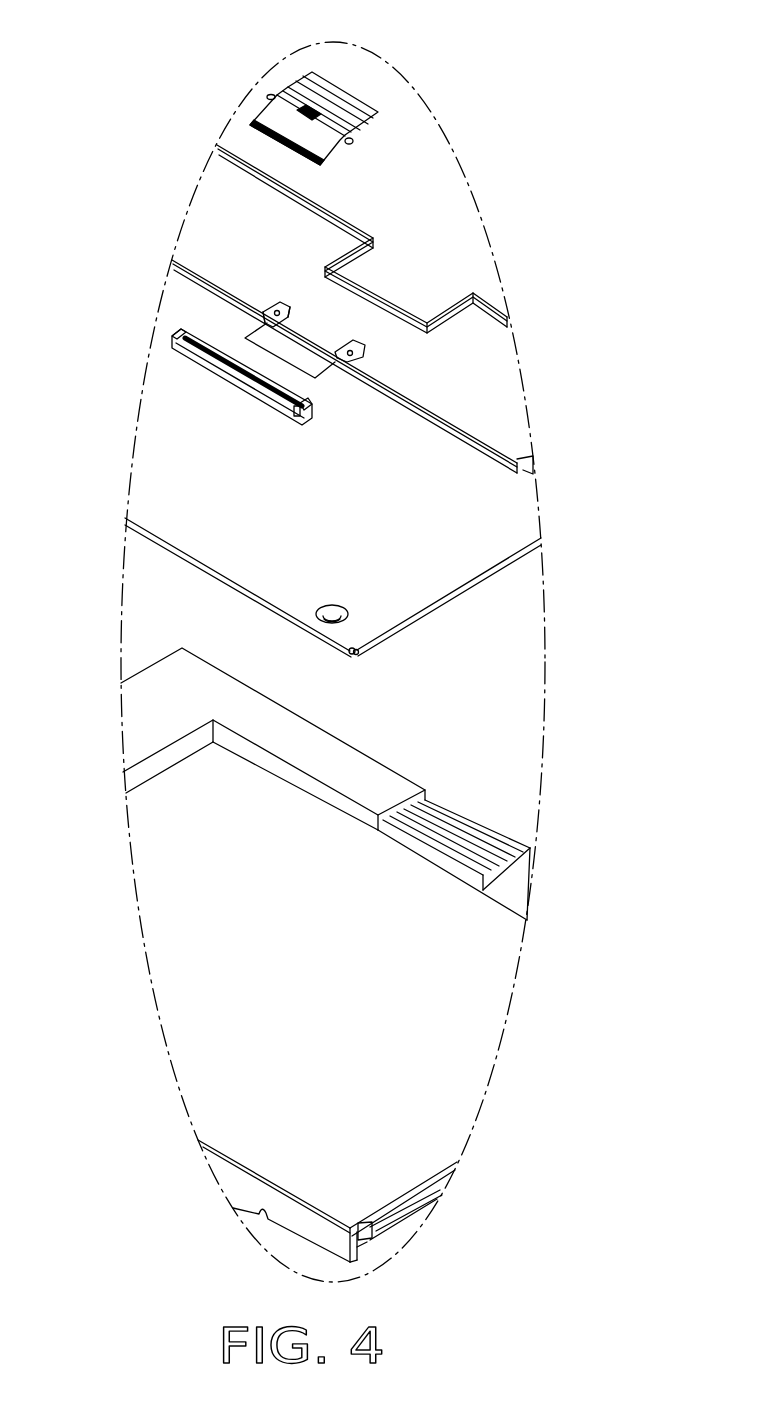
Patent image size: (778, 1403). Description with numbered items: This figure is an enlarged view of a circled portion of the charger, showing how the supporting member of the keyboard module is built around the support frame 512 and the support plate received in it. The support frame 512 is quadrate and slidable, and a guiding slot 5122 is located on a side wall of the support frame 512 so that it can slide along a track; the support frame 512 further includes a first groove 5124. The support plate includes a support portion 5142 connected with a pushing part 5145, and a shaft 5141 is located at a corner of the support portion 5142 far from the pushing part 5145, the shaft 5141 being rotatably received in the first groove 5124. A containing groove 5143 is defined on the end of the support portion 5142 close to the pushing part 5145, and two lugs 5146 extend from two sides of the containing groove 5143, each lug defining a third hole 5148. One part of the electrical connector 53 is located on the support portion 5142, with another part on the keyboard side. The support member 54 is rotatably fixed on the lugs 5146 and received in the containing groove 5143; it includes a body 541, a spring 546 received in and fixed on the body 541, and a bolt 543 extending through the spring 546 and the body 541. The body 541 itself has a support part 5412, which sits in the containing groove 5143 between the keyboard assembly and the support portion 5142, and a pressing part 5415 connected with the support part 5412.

The support member 54 is at (507, 24).
The body 541 is at (352, 103).
The bolt 543 is at (357, 138).
The spring 546 is at (317, 110).
The pressing part 5415 is at (308, 83).
The support part 5412 is at (263, 125).
The pushing part 5145 is at (485, 340).
The lugs 5146 is at (277, 302).
The containing groove 5143 is at (273, 345).
The third hole 5148 is at (365, 358).
The electrical connector 53 is at (200, 370).
The support portion 5142 is at (185, 443).
The shaft 5141 is at (359, 651).
The support frame 512 is at (432, 1180).
The guiding slot 5122 is at (432, 1210).
The first groove 5124 is at (367, 1243).